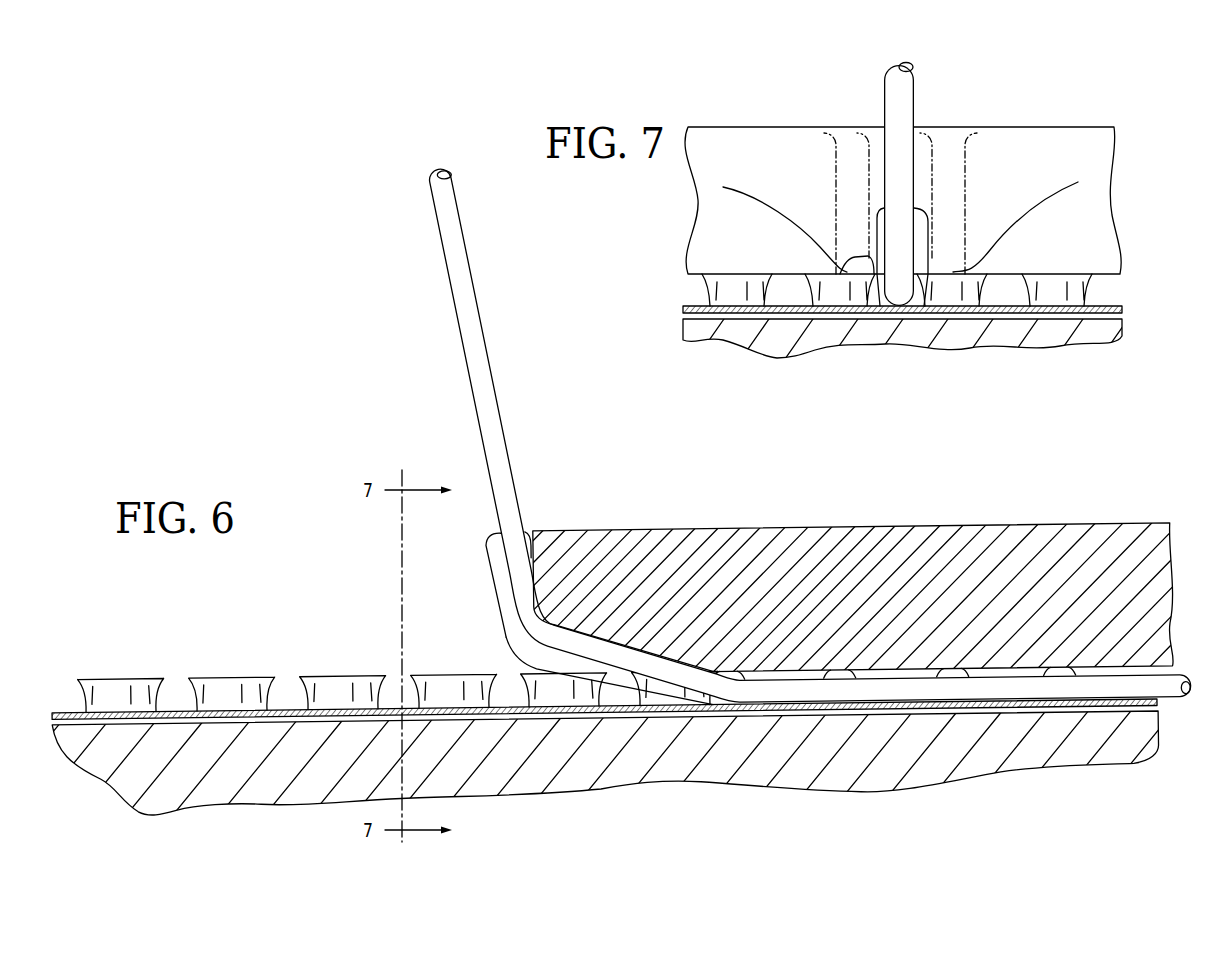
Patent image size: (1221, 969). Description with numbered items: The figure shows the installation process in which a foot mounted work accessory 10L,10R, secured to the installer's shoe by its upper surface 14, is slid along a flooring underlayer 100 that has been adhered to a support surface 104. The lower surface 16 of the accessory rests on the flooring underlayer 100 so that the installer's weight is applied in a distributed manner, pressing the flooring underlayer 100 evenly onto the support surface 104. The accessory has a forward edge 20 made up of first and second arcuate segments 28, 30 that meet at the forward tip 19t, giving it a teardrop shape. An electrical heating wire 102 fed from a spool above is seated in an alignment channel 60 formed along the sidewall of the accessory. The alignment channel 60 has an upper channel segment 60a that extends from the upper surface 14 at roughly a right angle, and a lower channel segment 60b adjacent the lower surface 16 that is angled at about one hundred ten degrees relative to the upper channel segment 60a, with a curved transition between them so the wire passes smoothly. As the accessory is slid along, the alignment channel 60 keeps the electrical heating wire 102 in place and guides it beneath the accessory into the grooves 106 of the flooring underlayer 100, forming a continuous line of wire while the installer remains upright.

In FIG. 6, the foot mounted work accessory 10L,10R is at (807, 566).
In FIG. 7, the foot mounted work accessory 10L,10R is at (908, 222).
In FIG. 6, the upper surface 14 is at (740, 530).
In FIG. 7, the lower surface 16 is at (1110, 288).
In FIG. 7, the forward tip 19t is at (836, 184).
In FIG. 7, the forward edge 20 is at (738, 157).
In FIG. 7, the first arcuate segment 28 is at (807, 217).
In FIG. 7, the second arcuate segment 30 is at (1010, 203).
In FIG. 6, the alignment channel 60 is at (566, 578).
In FIG. 7, the alignment channel 60 is at (904, 235).
In FIG. 6, the upper channel segment 60a is at (532, 530).
In FIG. 7, the upper channel segment 60a is at (925, 128).
In FIG. 6, the lower channel segment 60b is at (553, 650).
In FIG. 7, the lower channel segment 60b is at (860, 257).
In FIG. 6, the flooring underlayer 100 is at (604, 657).
In FIG. 7, the flooring underlayer 100 is at (877, 337).
In FIG. 6, the electrical heating wire 102 is at (446, 275).
In FIG. 7, the electrical heating wire 102 is at (910, 88).
In FIG. 6, the support surface 104 is at (235, 768).
In FIG. 7, the support surface 104 is at (1031, 347).
In FIG. 6, the grooves 106 is at (396, 690).
In FIG. 7, the grooves 106 is at (1003, 298).